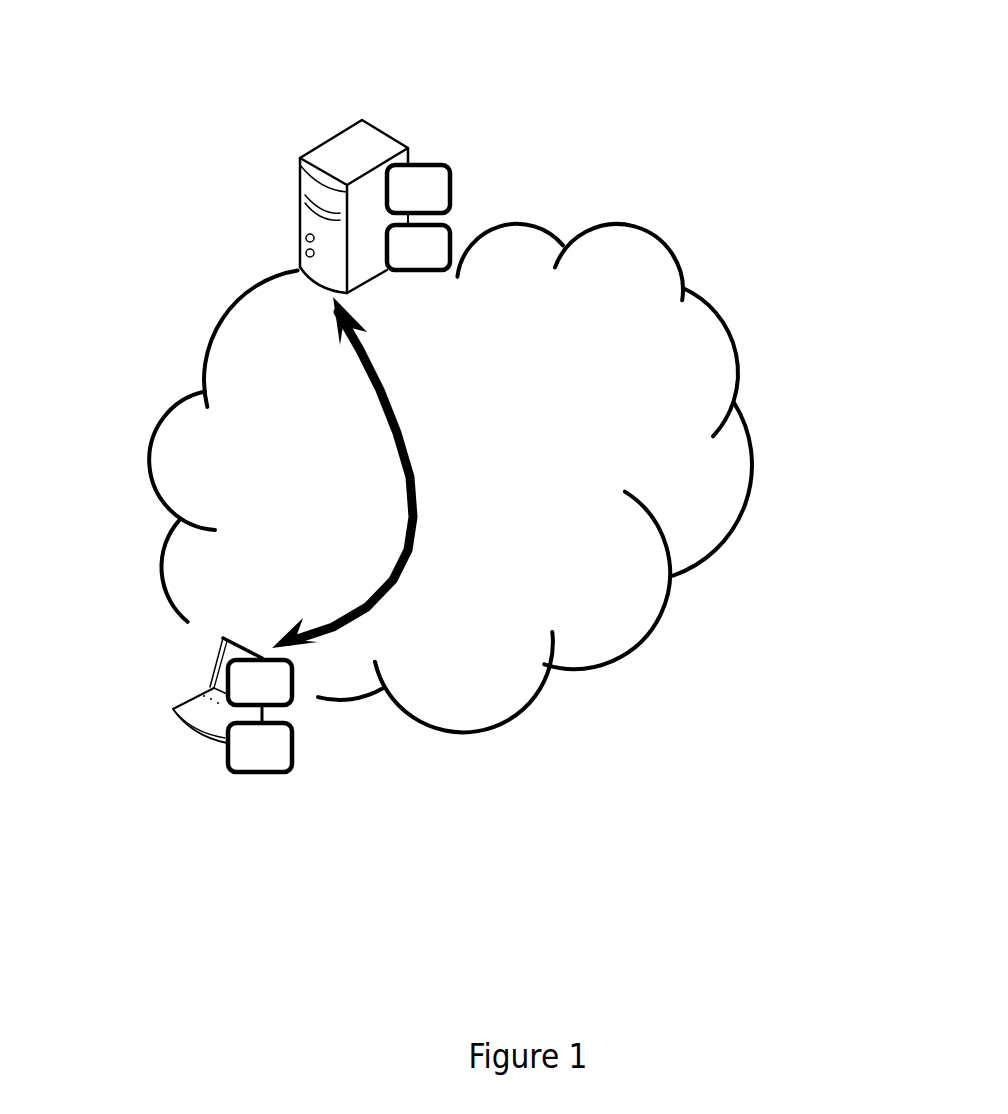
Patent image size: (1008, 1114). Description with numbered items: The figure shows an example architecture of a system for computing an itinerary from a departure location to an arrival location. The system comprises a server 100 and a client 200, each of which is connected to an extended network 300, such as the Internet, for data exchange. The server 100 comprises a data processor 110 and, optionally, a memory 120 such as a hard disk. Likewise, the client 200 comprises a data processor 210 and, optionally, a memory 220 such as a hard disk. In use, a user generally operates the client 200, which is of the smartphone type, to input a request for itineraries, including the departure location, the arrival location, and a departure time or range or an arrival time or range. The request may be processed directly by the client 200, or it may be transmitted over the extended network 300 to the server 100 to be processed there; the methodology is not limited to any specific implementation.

The server 100 is at (366, 108).
The data processor 110 is at (461, 261).
The memory 120 is at (467, 176).
The client 200 is at (170, 698).
The data processor 210 is at (309, 778).
The memory 220 is at (312, 686).
The extended network 300 is at (734, 329).